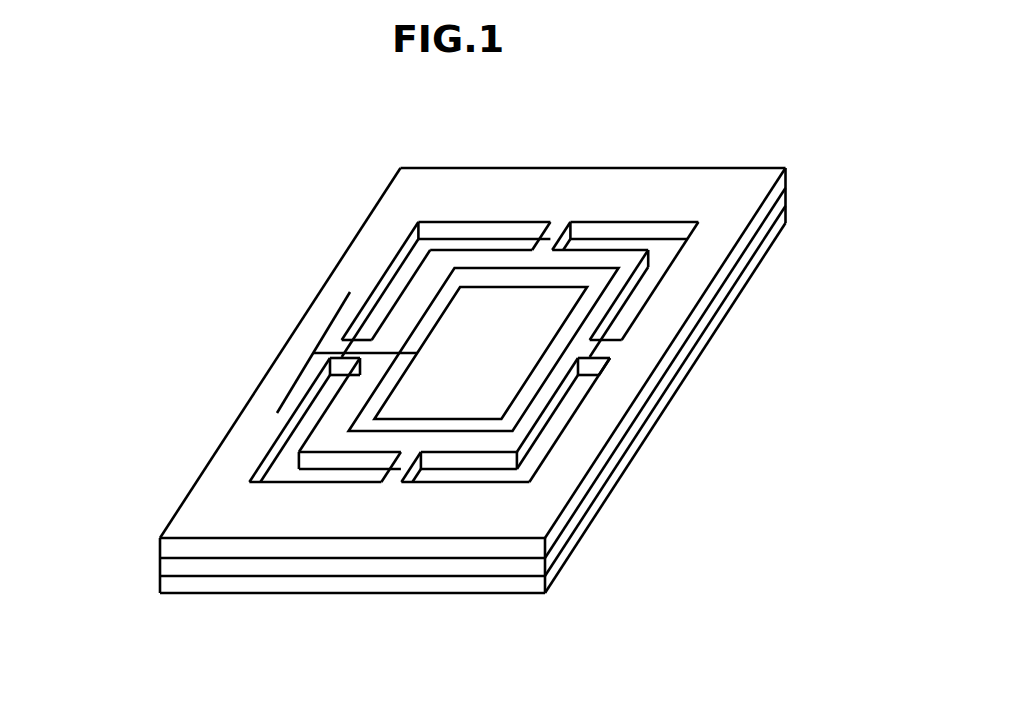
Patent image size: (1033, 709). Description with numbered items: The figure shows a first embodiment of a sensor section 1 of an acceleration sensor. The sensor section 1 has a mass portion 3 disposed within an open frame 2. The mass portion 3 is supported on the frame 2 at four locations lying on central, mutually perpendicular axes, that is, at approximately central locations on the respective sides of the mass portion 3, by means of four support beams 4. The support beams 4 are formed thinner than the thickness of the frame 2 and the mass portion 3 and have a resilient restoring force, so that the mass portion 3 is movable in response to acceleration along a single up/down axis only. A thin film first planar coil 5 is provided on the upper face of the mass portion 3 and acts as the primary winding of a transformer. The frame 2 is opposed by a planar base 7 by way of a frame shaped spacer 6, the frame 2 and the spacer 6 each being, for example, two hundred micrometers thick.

The sensor section 1 is at (766, 162).
The frame 2 is at (683, 178).
The mass portion 3 is at (327, 432).
The support beams 4 is at (548, 243).
The first planar coil 5 is at (488, 290).
The spacer 6 is at (734, 288).
The planar base 7 is at (733, 313).